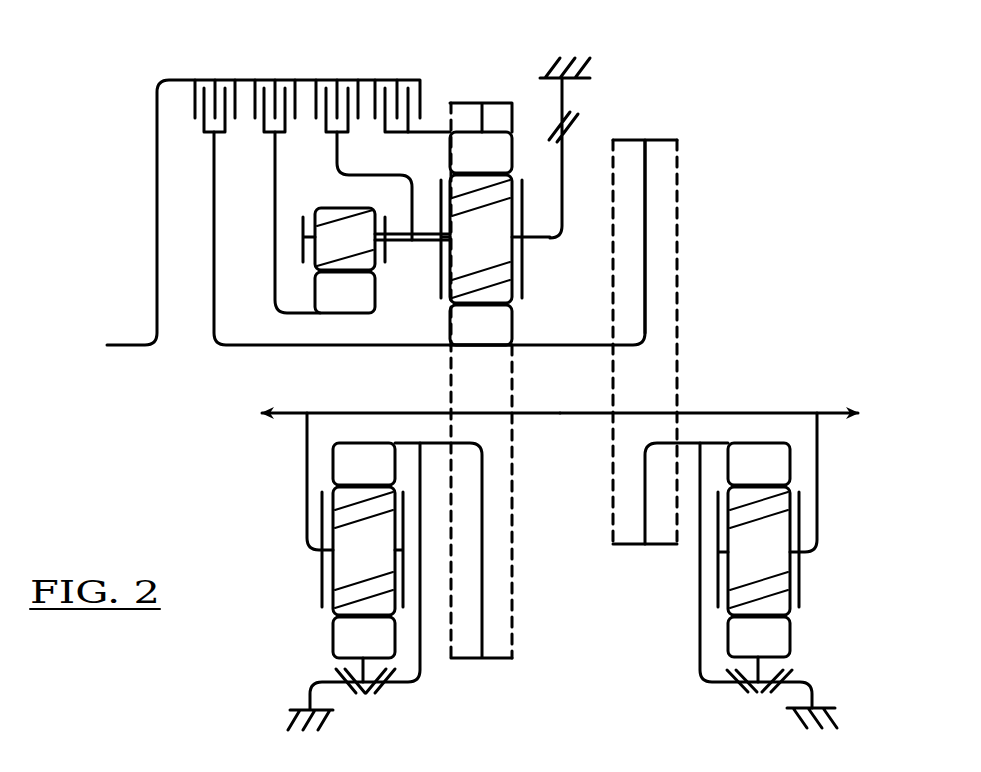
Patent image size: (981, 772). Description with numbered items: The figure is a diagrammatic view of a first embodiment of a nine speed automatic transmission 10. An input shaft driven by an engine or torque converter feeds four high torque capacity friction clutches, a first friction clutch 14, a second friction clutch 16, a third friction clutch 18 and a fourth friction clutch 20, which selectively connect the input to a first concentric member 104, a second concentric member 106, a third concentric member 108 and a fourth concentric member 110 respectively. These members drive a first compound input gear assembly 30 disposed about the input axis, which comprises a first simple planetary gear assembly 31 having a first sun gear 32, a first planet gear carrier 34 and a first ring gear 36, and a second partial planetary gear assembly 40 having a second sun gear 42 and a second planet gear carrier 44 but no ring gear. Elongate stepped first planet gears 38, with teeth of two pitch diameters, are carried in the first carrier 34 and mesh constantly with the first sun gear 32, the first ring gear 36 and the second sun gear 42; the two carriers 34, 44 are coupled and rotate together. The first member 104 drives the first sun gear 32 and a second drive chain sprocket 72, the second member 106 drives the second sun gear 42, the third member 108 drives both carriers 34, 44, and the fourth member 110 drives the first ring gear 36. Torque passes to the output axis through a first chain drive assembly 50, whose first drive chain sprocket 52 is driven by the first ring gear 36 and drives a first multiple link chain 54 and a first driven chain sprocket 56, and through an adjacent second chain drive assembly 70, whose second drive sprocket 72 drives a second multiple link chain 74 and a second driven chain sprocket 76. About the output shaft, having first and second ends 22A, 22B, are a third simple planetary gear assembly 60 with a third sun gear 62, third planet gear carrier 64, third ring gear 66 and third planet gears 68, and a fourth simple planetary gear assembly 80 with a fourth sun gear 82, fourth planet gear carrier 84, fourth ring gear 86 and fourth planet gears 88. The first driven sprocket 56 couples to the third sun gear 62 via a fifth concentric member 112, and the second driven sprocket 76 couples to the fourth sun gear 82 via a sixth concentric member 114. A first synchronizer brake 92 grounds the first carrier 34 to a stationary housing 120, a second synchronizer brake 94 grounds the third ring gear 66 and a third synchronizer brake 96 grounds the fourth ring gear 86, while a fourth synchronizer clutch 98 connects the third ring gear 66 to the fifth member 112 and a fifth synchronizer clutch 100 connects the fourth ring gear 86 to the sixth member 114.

The nine speed automatic transmission 10 is at (758, 215).
The first high torque capacity friction clutch 14 is at (207, 99).
The second high torque capacity friction clutch 16 is at (267, 99).
The third high torque capacity friction clutch 18 is at (329, 99).
The fourth high torque capacity friction clutch 20 is at (389, 99).
The first end of output shaft 22A is at (300, 417).
The second end of output shaft 22B is at (828, 412).
The first compound input gear assembly 30 is at (188, 378).
The first simple planetary gear assembly 31 is at (477, 357).
The first sun gear 32 is at (495, 339).
The first planet gear carrier 34 is at (524, 261).
The first ring gear 36 is at (495, 166).
The first planet gears 38 is at (495, 253).
The second partial planetary gear assembly 40 is at (343, 325).
The second sun gear 42 is at (359, 306).
The second planet gear carrier 44 is at (303, 249).
The first chain drive assembly 50 is at (505, 713).
The first drive chain sprocket 52 is at (493, 103).
The first multiple link chain 54 is at (513, 402).
The first driven chain sprocket 56 is at (512, 660).
The third simple planetary gear assembly 60 is at (280, 689).
The third sun gear 62 is at (378, 478).
The third planet gear carrier 64 is at (322, 578).
The third ring gear 66 is at (378, 651).
The third planet gears 68 is at (378, 565).
The second chain drive assembly 70 is at (725, 138).
The second drive chain sprocket 72 is at (658, 140).
The second multiple link chain 74 is at (681, 300).
The second driven chain sprocket 76 is at (633, 547).
The fourth simple planetary gear assembly 80 is at (862, 540).
The fourth sun gear 82 is at (773, 478).
The fourth planet gear carrier 84 is at (800, 505).
The fourth ring gear 86 is at (773, 651).
The fourth planet gears 88 is at (773, 565).
The first synchronizer clutch (brake) 92 is at (575, 118).
The second synchronizer clutch (brake) 94 is at (337, 675).
The third synchronizer clutch (brake) 96 is at (787, 680).
The fourth synchronizer clutch 98 is at (383, 684).
The fifth synchronizer clutch 100 is at (738, 683).
The first shaft, quill or concentric member 104 is at (212, 155).
The second shaft, quill or concentric member 106 is at (273, 148).
The third shaft, quill or concentric member 108 is at (333, 153).
The fourth shaft, quill or concentric member 110 is at (434, 131).
The fifth shaft, quill or concentric member 112 is at (425, 627).
The sixth shaft, quill or concentric member 114 is at (700, 632).
The stationary housing 120 is at (833, 725).